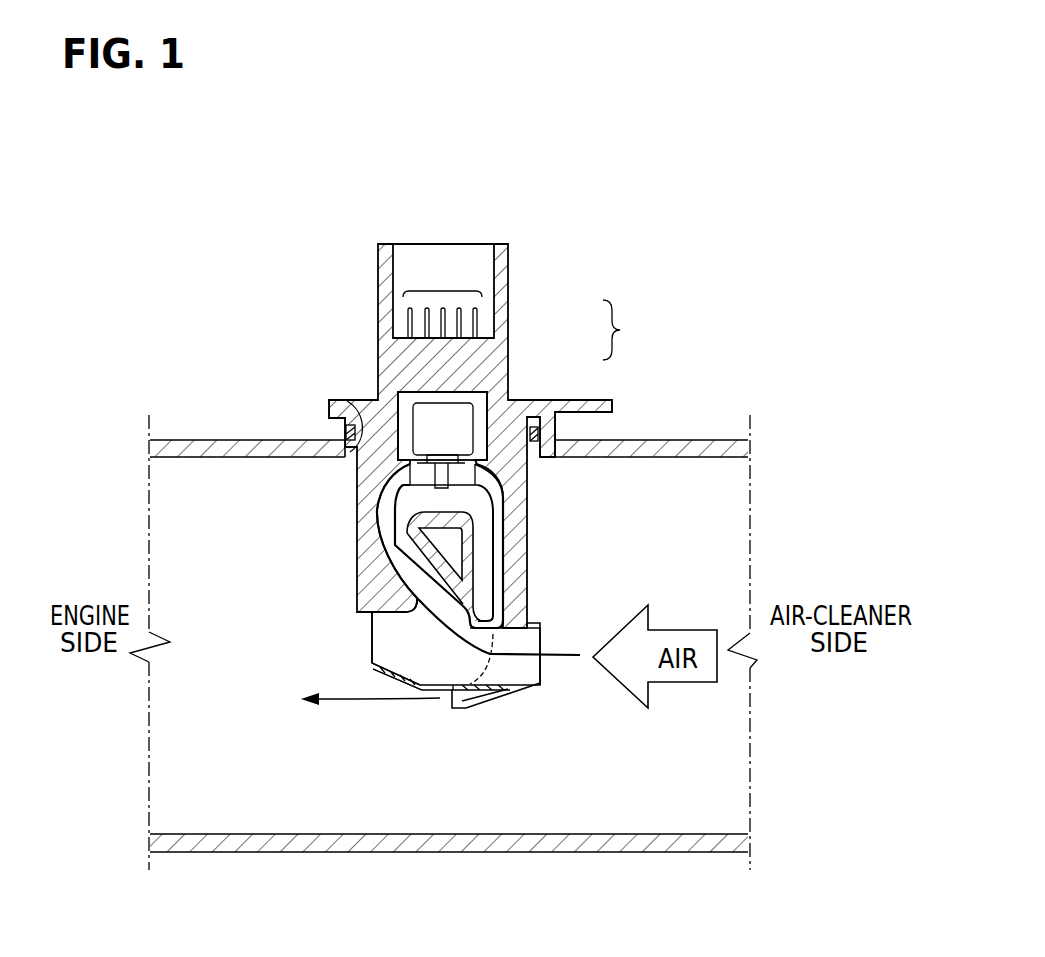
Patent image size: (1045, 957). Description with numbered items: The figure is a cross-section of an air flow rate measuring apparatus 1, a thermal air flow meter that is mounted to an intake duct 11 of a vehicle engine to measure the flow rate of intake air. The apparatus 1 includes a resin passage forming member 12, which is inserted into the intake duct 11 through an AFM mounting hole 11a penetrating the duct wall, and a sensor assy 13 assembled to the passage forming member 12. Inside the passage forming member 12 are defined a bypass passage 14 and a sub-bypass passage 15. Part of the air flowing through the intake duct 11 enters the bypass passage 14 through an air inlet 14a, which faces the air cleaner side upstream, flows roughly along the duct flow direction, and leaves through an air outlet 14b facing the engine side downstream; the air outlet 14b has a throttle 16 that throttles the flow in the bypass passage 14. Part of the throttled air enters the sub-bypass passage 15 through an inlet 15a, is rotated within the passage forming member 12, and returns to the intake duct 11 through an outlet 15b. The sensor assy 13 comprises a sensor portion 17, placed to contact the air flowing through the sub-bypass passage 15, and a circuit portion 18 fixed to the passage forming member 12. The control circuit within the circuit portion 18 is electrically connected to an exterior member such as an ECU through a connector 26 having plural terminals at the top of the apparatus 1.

The air flow rate measuring apparatus 1 is at (520, 279).
The intake duct 11 is at (170, 446).
The AFM mounting hole 11a is at (372, 399).
The passage forming member 12 is at (378, 420).
The sensor assy 13 is at (530, 394).
The bypass passage 14 is at (510, 670).
The air inlet 14a is at (535, 670).
The air outlet 14b is at (370, 657).
The sub-bypass passage 15 is at (503, 520).
The inlet 15a is at (417, 597).
The outlet 15b is at (452, 702).
The throttle 16 is at (398, 670).
The sensor portion 17 is at (457, 420).
The circuit portion 18 is at (443, 477).
The connector 26 is at (441, 291).